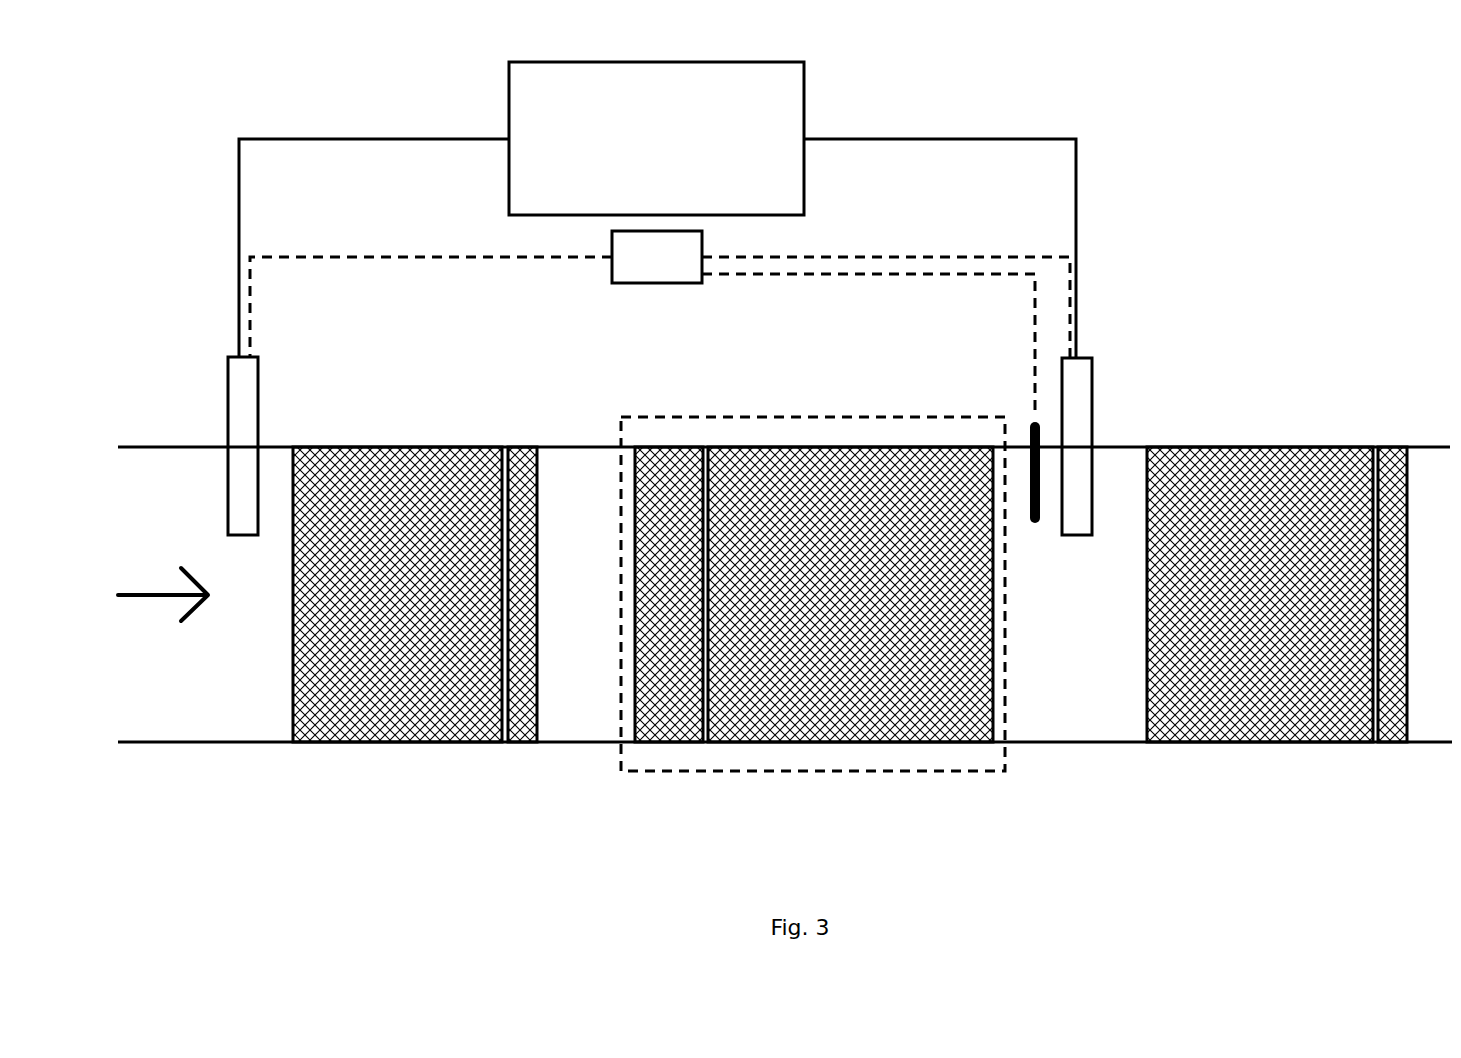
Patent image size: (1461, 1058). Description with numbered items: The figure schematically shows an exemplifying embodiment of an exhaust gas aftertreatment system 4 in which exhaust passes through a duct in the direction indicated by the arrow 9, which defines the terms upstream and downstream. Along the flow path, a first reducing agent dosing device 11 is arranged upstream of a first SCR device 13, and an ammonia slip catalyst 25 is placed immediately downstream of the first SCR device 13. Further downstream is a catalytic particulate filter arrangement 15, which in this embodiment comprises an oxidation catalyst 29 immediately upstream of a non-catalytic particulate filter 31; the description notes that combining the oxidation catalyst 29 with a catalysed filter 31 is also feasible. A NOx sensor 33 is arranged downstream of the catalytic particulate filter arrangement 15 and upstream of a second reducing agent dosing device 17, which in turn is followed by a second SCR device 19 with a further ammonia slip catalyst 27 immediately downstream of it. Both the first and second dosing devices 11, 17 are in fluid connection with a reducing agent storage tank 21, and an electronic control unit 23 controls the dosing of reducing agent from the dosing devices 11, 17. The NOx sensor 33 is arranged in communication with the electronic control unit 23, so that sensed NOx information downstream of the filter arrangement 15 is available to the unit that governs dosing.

The exhaust gas aftertreatment system 4 is at (1040, 816).
The arrow 9 is at (145, 597).
The first reducing agent dosing device 11 is at (228, 387).
The first SCR device 13 is at (398, 742).
The catalytic particulate filter arrangement 15 is at (772, 771).
The second reducing agent dosing device 17 is at (1092, 387).
The second SCR device 19 is at (1258, 447).
The reducing agent storage tank 21 is at (657, 210).
The electronic control unit 23 is at (660, 322).
The ammonia slip catalyst 25 is at (522, 742).
The ammonia slip catalyst 27 is at (1392, 742).
The oxidation catalyst 29 is at (668, 742).
The non-catalytic particulate filter 31 is at (850, 742).
The NOx sensor 33 is at (1028, 430).